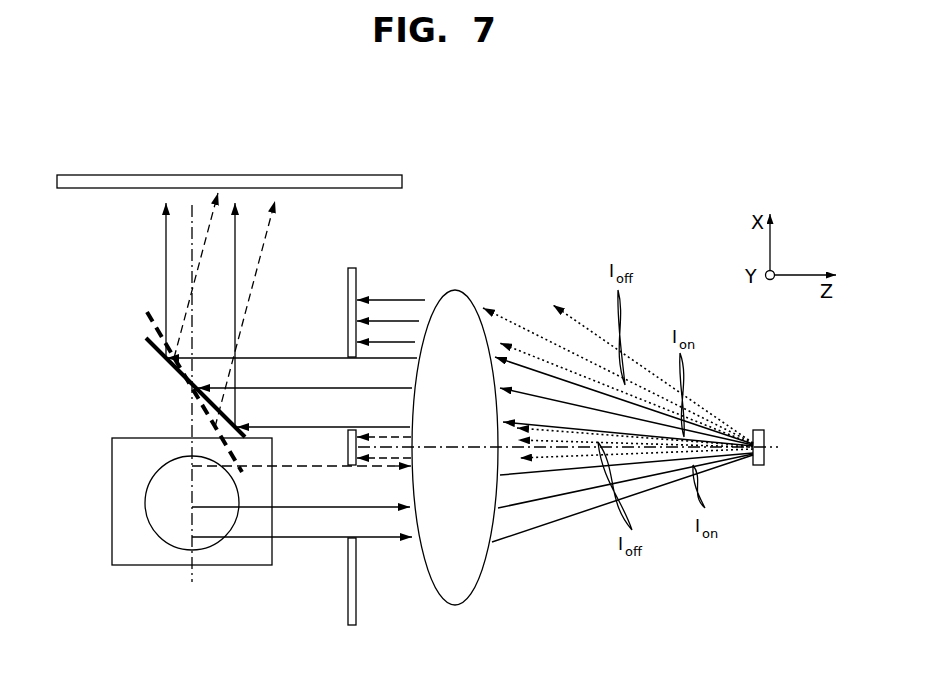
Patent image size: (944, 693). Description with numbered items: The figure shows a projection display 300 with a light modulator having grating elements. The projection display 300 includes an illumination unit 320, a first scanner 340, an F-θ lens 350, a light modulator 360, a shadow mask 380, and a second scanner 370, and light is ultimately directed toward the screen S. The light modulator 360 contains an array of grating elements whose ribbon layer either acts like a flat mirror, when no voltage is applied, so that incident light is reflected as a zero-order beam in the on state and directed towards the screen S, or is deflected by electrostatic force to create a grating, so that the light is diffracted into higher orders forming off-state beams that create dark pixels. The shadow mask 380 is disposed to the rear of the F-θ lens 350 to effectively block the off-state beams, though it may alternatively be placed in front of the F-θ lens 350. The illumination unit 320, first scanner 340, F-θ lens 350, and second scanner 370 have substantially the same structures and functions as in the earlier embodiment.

The screen S is at (403, 183).
The projection display 300 is at (582, 206).
The illumination unit 320 is at (222, 566).
The first scanner 340 is at (146, 503).
The F-θ lens 350 is at (483, 558).
The light modulator 360 is at (758, 430).
The second scanner 370 is at (161, 352).
The shadow mask 380 is at (358, 277).